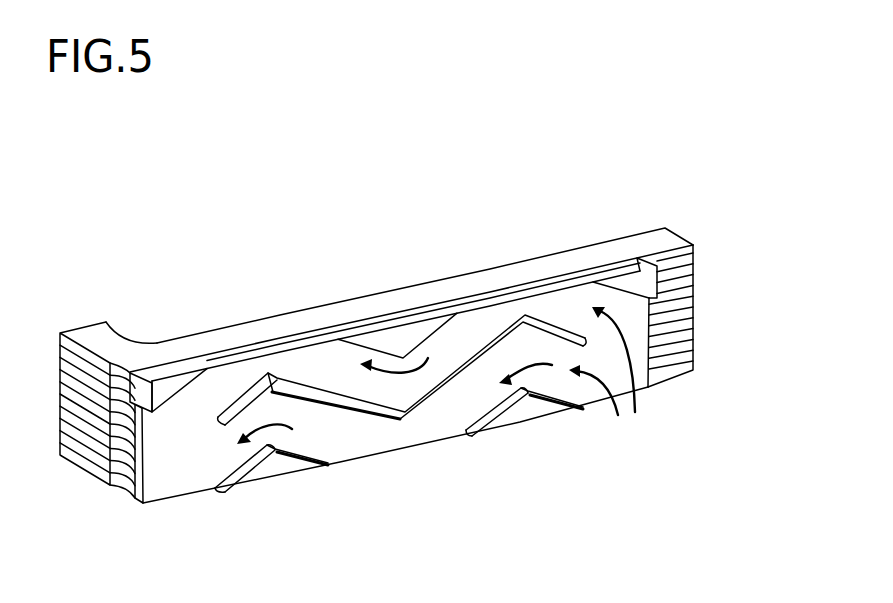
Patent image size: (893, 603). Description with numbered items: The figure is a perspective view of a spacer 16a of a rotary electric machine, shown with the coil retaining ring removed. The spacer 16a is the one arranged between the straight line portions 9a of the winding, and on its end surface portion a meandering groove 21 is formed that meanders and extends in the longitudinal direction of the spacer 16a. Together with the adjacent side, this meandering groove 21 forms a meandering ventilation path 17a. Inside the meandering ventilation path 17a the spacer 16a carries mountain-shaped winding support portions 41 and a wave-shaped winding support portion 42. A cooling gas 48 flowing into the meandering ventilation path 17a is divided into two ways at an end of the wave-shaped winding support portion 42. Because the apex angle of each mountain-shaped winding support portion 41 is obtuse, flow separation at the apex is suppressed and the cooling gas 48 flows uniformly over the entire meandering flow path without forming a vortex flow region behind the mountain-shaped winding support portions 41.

The straight line portion 9a is at (462, 280).
The meandering groove 21 is at (515, 307).
The spacer 16a is at (616, 268).
The meandering ventilation path 17a is at (187, 432).
The mountain-shaped winding support portion 41 is at (270, 467).
The wave-shaped winding support portion 42 is at (433, 407).
The cooling gas 48 is at (632, 345).